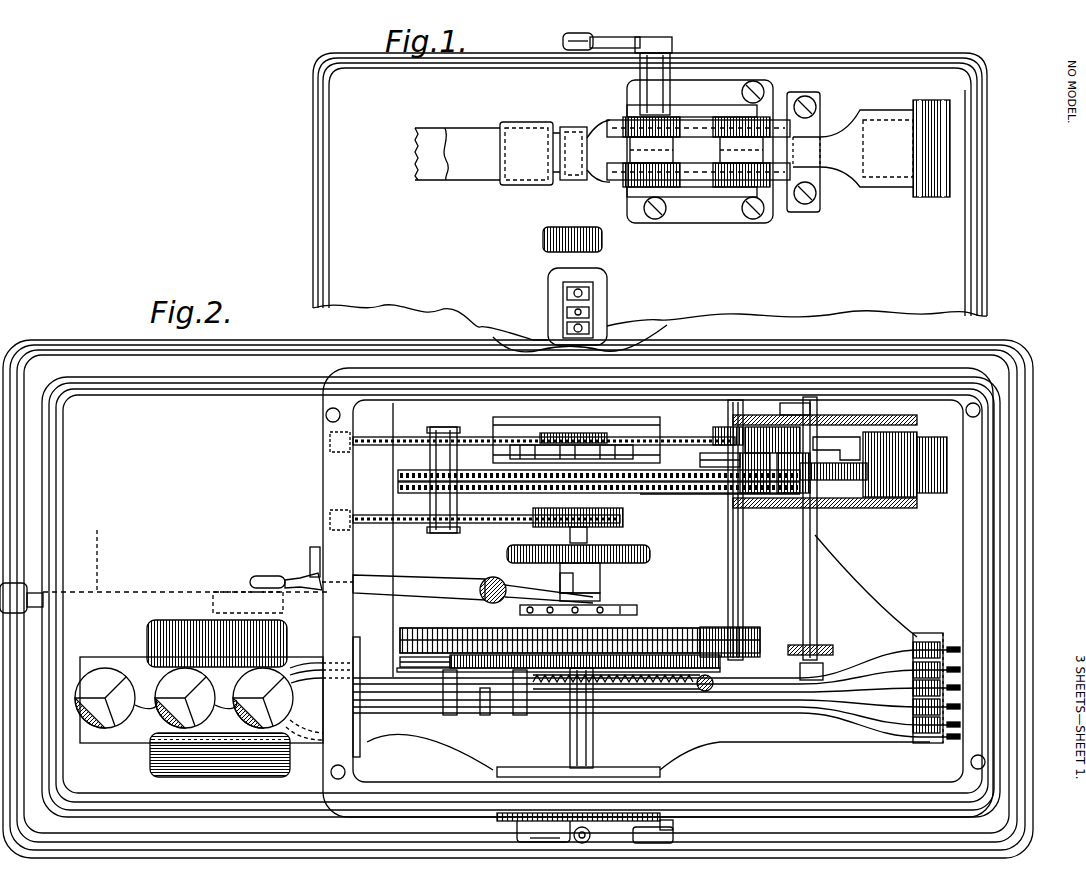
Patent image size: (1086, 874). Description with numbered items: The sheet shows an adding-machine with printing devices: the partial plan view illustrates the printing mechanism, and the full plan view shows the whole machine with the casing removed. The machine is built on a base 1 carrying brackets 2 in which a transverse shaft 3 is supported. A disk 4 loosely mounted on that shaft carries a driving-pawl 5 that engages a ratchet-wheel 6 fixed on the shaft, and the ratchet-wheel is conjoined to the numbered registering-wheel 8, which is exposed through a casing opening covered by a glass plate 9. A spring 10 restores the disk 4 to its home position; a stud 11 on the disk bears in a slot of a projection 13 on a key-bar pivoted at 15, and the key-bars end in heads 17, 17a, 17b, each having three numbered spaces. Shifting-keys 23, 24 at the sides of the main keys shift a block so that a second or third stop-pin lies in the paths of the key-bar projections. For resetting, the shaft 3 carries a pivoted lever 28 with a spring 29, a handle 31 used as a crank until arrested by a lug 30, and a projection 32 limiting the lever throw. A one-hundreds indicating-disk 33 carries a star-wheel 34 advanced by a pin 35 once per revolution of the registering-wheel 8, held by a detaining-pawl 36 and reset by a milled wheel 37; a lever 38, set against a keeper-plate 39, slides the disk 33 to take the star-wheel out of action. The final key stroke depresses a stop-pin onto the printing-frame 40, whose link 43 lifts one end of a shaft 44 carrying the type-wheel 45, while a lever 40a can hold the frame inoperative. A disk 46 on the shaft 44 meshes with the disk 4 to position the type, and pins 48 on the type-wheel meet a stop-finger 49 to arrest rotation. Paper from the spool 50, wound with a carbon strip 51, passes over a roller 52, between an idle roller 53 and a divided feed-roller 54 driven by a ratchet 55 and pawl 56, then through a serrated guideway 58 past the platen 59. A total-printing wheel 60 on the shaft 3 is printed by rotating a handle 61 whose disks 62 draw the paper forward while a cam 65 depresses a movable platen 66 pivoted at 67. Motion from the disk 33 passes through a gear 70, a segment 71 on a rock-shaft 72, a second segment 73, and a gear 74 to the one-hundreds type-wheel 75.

In FIG. 2, the base 1 is at (55, 347).
In FIG. 2, the brackets 2 is at (517, 422).
In FIG. 2, the transverse shaft 3 is at (595, 740).
In FIG. 2, the disk 4 is at (620, 690).
In FIG. 2, the driving-pawl 5 is at (430, 660).
In FIG. 2, the ratchet-wheel 6 is at (497, 663).
In FIG. 1, the registering-wheel 8 is at (583, 327).
In FIG. 2, the registering-wheel 8 is at (693, 616).
In FIG. 1, the glass plate 9 is at (580, 312).
In FIG. 2, the spring 10 is at (633, 700).
In FIG. 2, the stud 11 is at (450, 697).
In FIG. 2, the projection 13 is at (450, 715).
In FIG. 2, the pivot 15 is at (933, 741).
In FIG. 2, the head 17 is at (290, 724).
In FIG. 2, the head 17a is at (167, 720).
In FIG. 2, the head 17b is at (105, 730).
In FIG. 2, the shifting-key 23 is at (157, 622).
In FIG. 2, the shifting-key 24 is at (228, 763).
In FIG. 2, the pivoted lever 28 is at (543, 836).
In FIG. 2, the spring 29 is at (627, 822).
In FIG. 2, the lug 30 is at (667, 815).
In FIG. 2, the handle 31 is at (675, 831).
In FIG. 2, the projection 32 is at (497, 818).
In FIG. 2, the indicating-disk 33 is at (600, 617).
In FIG. 2, the star-wheel 34 is at (597, 600).
In FIG. 2, the pin 35 is at (612, 565).
In FIG. 2, the detaining-pawl 36 is at (500, 606).
In FIG. 1, the milled wheel 37 is at (547, 240).
In FIG. 2, the milled wheel 37 is at (535, 546).
In FIG. 2, the lever 38 is at (417, 587).
In FIG. 2, the keeper-plate 39 is at (310, 557).
In FIG. 2, the printing-frame 40 is at (353, 540).
In FIG. 2, the lever 40a is at (10, 590).
In FIG. 2, the link 43 is at (823, 406).
In FIG. 2, the shaft 44 is at (820, 547).
In FIG. 2, the type-wheel 45 is at (813, 480).
In FIG. 2, the disk 46 is at (842, 657).
In FIG. 2, the pins 48 is at (713, 460).
In FIG. 2, the stop-finger 49 is at (847, 450).
In FIG. 2, the spool 50 is at (947, 470).
In FIG. 1, the carbon strip 51 is at (428, 182).
In FIG. 2, the roller 52 is at (905, 448).
In FIG. 1, the idle roller 53 is at (733, 173).
In FIG. 2, the feed-roller 54 is at (783, 494).
In FIG. 2, the ratchet 55 is at (755, 430).
In FIG. 2, the pawl 56 is at (722, 428).
In FIG. 1, the serrated guideway 58 is at (526, 153).
In FIG. 1, the platen 59 is at (810, 173).
In FIG. 2, the total-printing wheel 60 is at (697, 494).
In FIG. 1, the handle 61 is at (563, 47).
In FIG. 1, the disks 62 is at (620, 127).
In FIG. 1, the cam projection 65 is at (567, 183).
In FIG. 1, the movable platen 66 is at (573, 147).
In FIG. 1, the pivot 67 is at (933, 100).
In FIG. 2, the gear 70 is at (620, 517).
In FIG. 2, the segment 71 is at (477, 523).
In FIG. 2, the rock-shaft 72 is at (440, 460).
In FIG. 2, the segment 73 is at (544, 476).
In FIG. 2, the gear 74 is at (547, 440).
In FIG. 2, the type-wheel 75 is at (627, 440).